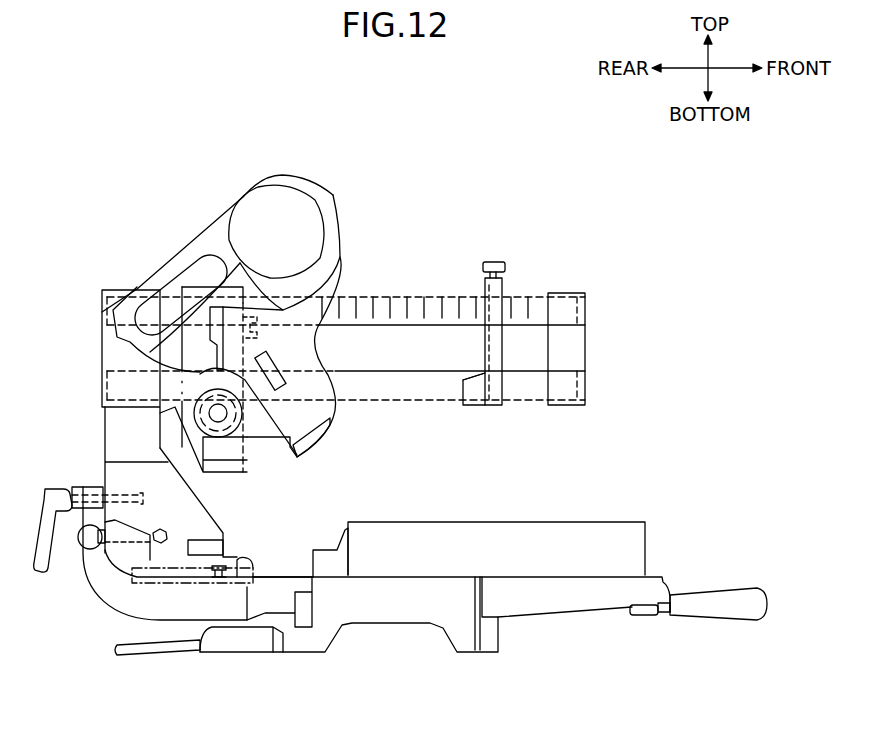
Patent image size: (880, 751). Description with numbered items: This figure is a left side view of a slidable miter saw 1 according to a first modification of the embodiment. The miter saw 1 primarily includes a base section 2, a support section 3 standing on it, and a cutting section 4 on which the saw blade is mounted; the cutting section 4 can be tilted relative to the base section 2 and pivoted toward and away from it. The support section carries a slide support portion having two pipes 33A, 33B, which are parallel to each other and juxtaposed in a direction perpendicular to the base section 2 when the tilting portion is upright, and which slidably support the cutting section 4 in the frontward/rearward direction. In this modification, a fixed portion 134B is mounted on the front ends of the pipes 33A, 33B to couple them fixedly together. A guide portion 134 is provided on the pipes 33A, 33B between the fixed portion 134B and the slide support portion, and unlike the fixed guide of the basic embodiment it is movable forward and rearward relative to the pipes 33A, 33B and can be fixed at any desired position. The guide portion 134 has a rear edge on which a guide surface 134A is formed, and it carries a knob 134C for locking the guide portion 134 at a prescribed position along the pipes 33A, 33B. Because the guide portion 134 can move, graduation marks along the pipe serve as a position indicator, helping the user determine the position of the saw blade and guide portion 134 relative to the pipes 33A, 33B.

The miter saw 1 is at (643, 218).
The base section 2 is at (398, 657).
The support section 3 is at (88, 631).
The cutting section 4 is at (332, 185).
The pipe 33A is at (113, 303).
The pipe 33B is at (170, 390).
The guide portion 134 is at (498, 305).
The guide surface 134A is at (482, 343).
The fixed portion 134B is at (578, 323).
The knob 134C is at (492, 259).